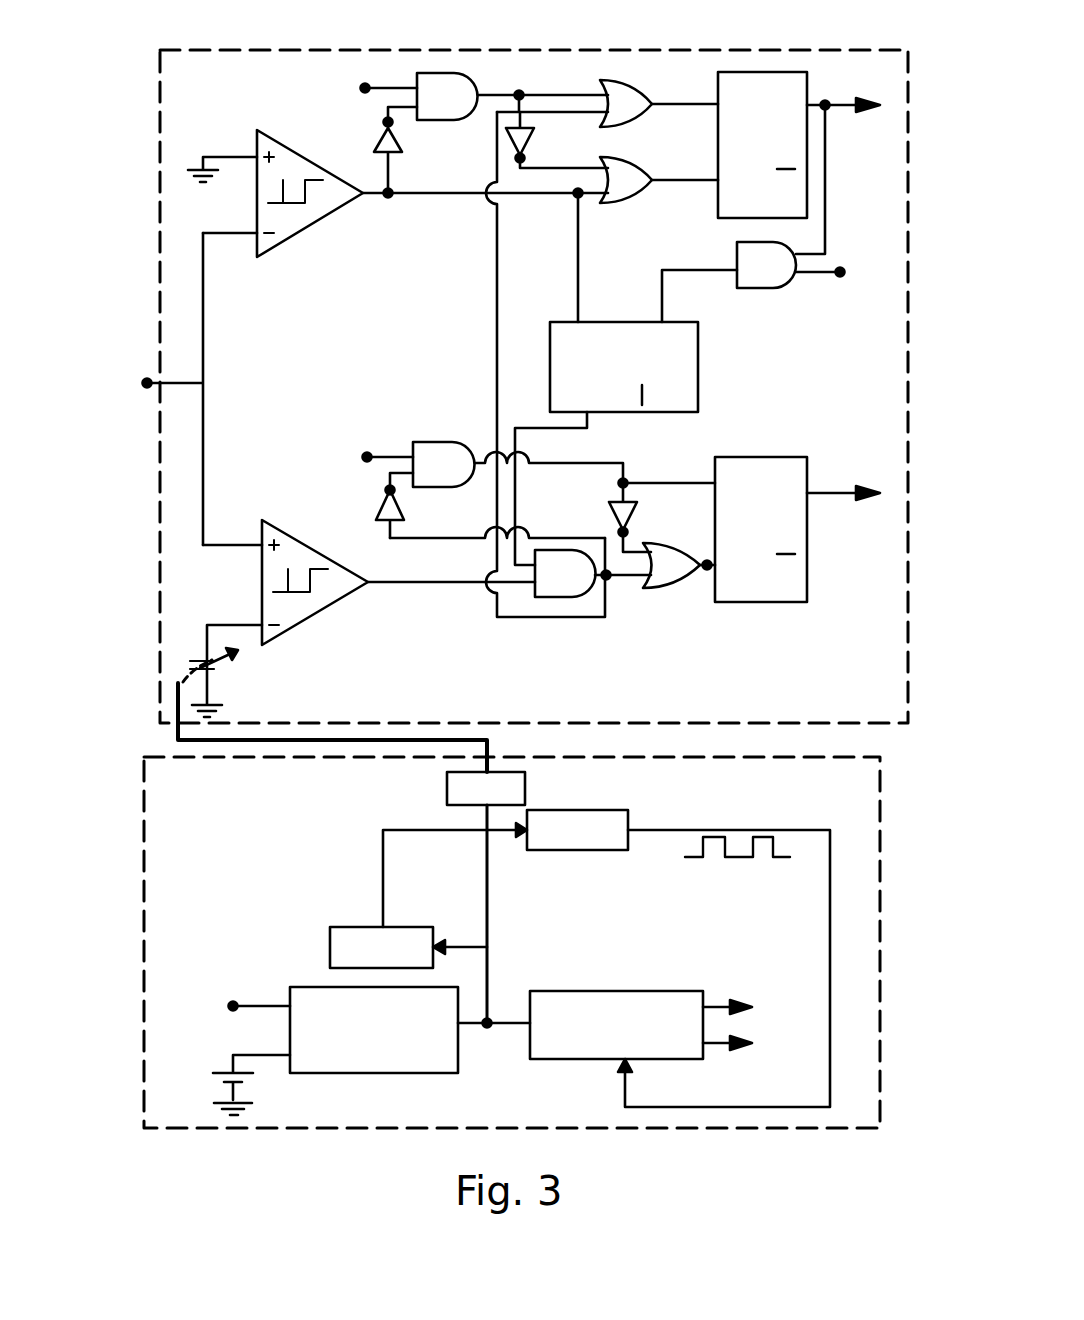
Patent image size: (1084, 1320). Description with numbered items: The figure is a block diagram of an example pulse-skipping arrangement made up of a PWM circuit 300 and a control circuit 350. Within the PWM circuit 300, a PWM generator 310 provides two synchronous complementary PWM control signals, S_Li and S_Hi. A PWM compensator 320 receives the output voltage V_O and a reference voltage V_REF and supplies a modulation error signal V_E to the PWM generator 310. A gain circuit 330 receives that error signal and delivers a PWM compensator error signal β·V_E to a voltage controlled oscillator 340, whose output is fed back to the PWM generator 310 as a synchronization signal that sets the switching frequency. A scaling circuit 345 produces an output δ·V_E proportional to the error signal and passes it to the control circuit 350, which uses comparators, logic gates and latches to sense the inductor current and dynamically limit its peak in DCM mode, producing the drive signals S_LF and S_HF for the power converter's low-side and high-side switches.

The control circuit 350 is at (160, 140).
The PWM circuit 300 is at (481, 905).
The scaling circuit 345 is at (447, 797).
The voltage controlled oscillator 340 is at (605, 838).
The gain circuit 330 is at (352, 934).
The PWM compensator 320 is at (437, 1055).
The PWM generator 310 is at (690, 995).